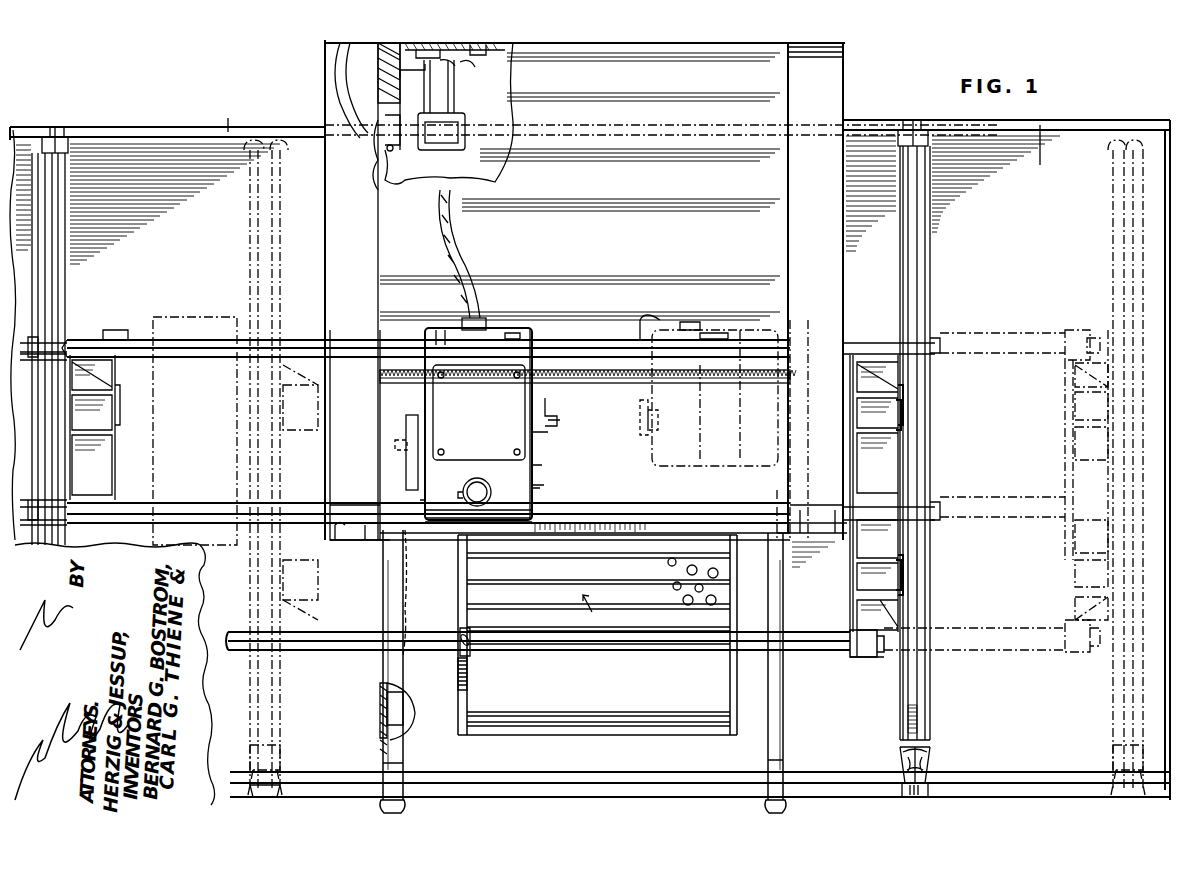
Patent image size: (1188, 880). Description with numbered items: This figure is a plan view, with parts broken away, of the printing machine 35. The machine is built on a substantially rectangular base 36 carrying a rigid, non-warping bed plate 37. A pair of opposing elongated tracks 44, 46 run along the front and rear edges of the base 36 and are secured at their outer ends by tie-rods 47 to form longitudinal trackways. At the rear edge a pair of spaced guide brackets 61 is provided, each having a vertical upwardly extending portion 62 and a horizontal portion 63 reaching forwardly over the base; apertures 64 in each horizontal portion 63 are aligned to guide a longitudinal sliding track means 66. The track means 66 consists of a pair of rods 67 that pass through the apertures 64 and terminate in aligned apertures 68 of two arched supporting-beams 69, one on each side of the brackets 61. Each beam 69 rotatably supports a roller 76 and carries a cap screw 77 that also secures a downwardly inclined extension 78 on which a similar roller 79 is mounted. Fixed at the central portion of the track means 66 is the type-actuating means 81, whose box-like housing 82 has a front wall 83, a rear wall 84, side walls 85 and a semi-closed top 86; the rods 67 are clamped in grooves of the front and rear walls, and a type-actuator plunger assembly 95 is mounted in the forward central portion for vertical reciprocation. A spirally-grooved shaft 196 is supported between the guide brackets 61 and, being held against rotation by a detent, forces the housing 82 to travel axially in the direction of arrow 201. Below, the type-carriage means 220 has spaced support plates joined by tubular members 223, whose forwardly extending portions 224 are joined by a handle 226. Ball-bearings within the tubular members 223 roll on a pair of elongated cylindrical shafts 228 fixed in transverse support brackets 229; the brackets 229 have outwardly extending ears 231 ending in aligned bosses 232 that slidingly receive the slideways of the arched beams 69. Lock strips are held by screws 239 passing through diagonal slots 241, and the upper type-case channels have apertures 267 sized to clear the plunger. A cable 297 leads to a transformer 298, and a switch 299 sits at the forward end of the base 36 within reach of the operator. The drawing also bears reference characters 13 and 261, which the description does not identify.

The work holder carriage 13 is at (840, 316).
The printing machine 35 is at (315, 103).
The base 36 is at (166, 128).
The bed plate 37 is at (625, 250).
The rail or track 44 is at (845, 791).
The rail or track 46 is at (627, 139).
The tie-rods 47 is at (1170, 207).
The guide brackets 61 is at (317, 81).
The vertical upwardly extending portion 62 is at (323, 52).
The horizontal portion 63 is at (327, 265).
The apertures 64 is at (347, 340).
The longitudinal sliding track means 66 is at (135, 340).
The rods 67 is at (587, 340).
The apertures 68 is at (72, 522).
The arched supporting-beams 69 is at (63, 273).
The roller 76 is at (62, 130).
The cap screw 77 is at (900, 752).
The downwardly inclined extension 78 is at (932, 717).
The roller 79 is at (280, 797).
The type-actuating means 81 is at (513, 327).
The housing 82 is at (532, 488).
The front wall 83 is at (444, 522).
The rear wall 84 is at (436, 332).
The side walls 85 is at (408, 487).
The semi-closed top 86 is at (491, 492).
The type-actuator plunger assembly 95 is at (478, 477).
The spirally-grooved shaft 196 is at (608, 385).
The arrow 201 is at (478, 424).
The type-carriage means 220 is at (597, 635).
The tubular members 223 is at (660, 660).
The forwardly extending portions 224 is at (471, 690).
The handle 226 is at (585, 718).
The elongated cylindrical shafts 228 is at (345, 652).
The support brackets 229 is at (848, 597).
The ears 231 is at (115, 420).
The bosses 232 is at (930, 403).
The screws 239 is at (478, 638).
The diagonal slots 241 is at (462, 640).
The pin 261 is at (683, 598).
The apertures 267 is at (670, 565).
The cable 297 is at (471, 218).
The transformer 298 is at (432, 150).
The switch 299 is at (372, 705).